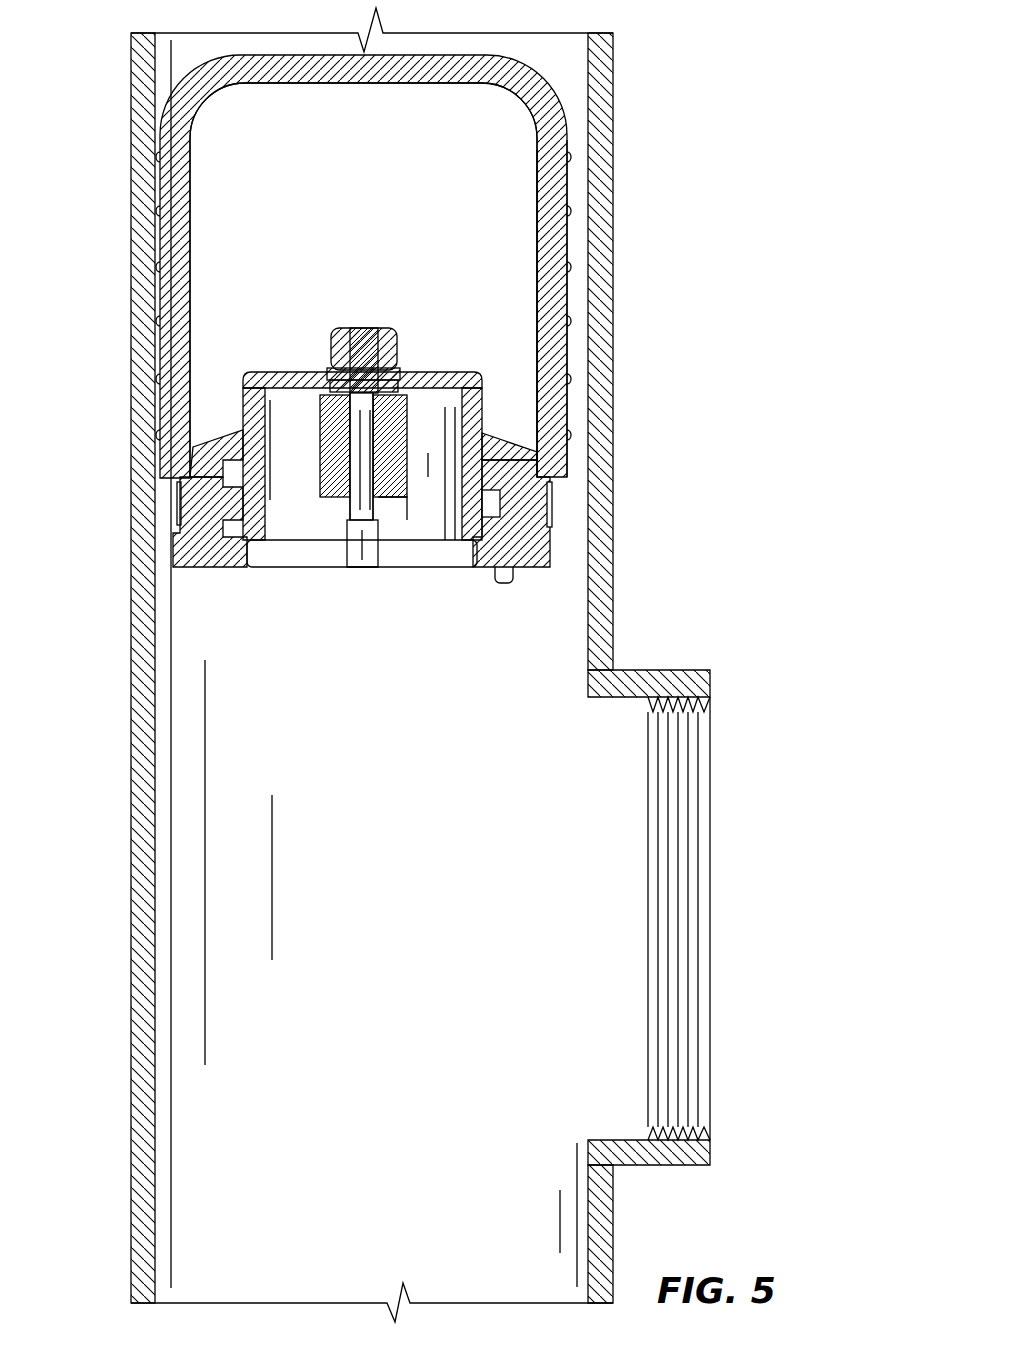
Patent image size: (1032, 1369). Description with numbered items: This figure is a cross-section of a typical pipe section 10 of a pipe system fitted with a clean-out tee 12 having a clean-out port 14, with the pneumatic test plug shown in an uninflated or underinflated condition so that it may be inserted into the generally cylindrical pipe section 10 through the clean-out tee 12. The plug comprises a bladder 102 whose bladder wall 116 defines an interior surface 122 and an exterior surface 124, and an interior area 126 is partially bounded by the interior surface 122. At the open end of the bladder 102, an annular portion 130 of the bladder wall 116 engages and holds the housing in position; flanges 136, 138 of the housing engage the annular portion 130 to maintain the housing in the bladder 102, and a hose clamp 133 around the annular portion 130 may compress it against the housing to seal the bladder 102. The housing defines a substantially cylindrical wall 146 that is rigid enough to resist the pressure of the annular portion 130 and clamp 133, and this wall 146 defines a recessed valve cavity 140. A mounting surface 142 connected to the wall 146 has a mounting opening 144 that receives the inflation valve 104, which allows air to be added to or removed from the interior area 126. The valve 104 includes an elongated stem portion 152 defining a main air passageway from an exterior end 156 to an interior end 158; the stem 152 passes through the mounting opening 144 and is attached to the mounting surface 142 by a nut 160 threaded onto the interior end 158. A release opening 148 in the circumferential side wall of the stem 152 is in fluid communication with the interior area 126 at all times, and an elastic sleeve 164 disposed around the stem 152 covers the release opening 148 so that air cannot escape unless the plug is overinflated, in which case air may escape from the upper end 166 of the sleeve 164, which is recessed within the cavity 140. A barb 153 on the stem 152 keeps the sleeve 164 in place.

The pipe section 10 is at (472, 665).
The clean-out tee 12 is at (636, 658).
The clean-out port 14 is at (722, 859).
The bladder 102 is at (381, 243).
The inflation valve 104 is at (322, 524).
The bladder wall 116 is at (545, 208).
The interior surface 122 is at (538, 270).
The exterior surface 124 is at (567, 298).
The interior area 126 is at (358, 230).
The annular portion 130 is at (523, 503).
The hose clamp 133 is at (178, 497).
The flange 136 is at (268, 529).
The flange 138 is at (193, 455).
The valve cavity 140 is at (458, 525).
The mounting surface 142 is at (294, 372).
The mounting opening 144 is at (405, 378).
The wall 146 is at (341, 425).
The release opening 148 is at (375, 457).
The stem portion 152 is at (345, 550).
The barb 153 is at (343, 540).
The exterior end 156 is at (367, 567).
The interior end 158 is at (365, 328).
The nut 160 is at (395, 340).
The sleeve 164 is at (335, 447).
The upper end 166 is at (392, 505).